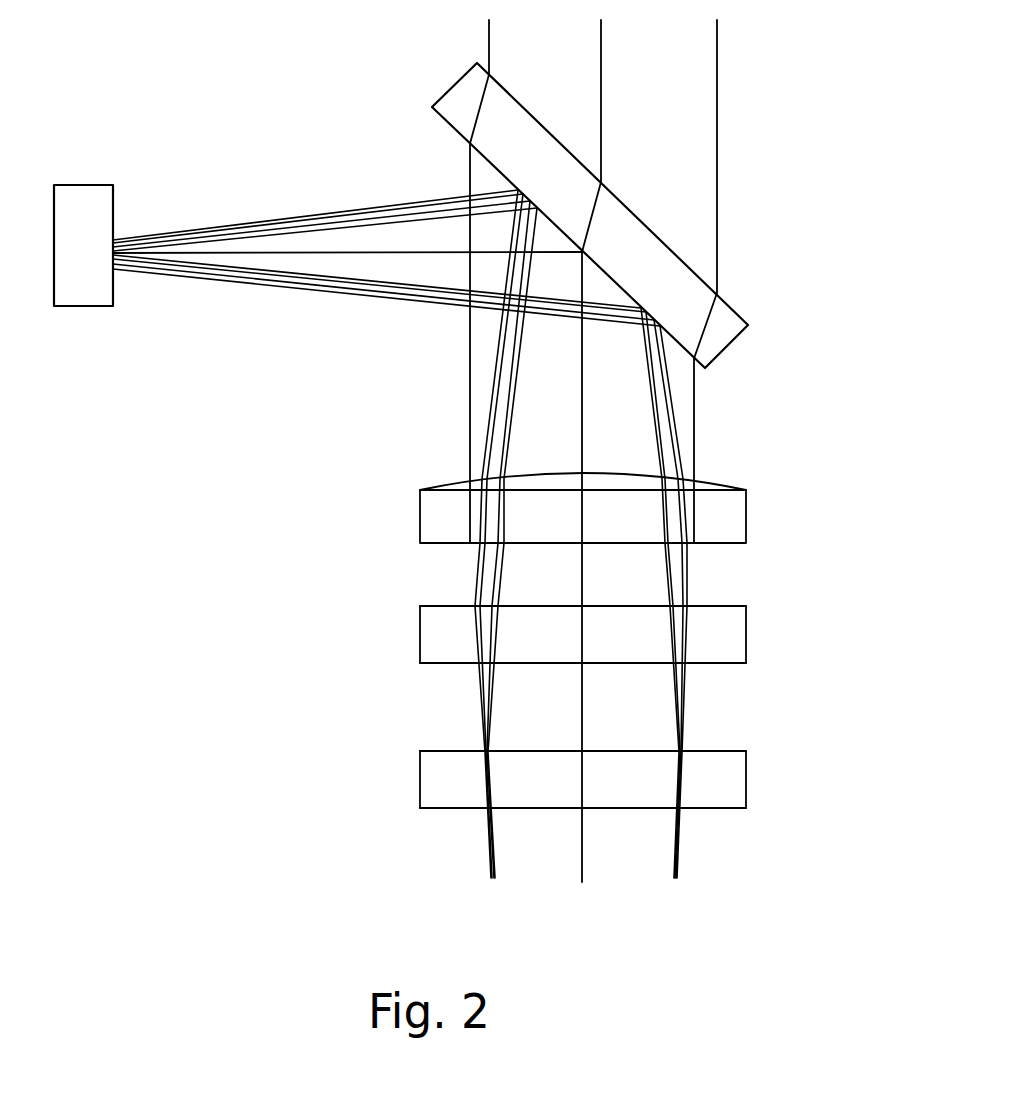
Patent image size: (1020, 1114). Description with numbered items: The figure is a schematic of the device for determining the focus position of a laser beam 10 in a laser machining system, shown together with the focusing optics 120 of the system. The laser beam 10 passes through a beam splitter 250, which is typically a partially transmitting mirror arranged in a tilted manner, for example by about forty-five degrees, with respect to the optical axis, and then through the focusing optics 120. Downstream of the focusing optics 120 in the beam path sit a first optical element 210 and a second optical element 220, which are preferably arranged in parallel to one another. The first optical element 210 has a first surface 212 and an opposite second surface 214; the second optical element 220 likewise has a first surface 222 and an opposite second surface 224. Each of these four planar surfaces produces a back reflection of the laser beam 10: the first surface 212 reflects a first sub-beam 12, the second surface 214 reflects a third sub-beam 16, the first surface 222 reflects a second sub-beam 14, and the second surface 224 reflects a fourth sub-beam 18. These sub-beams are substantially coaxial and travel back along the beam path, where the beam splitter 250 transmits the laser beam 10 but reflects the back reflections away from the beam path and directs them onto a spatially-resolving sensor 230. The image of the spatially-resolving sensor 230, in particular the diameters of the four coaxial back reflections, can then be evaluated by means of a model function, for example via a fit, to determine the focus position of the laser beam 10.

The laser beam 10 is at (717, 107).
The first sub-beam 12 is at (498, 380).
The second sub-beam 14 is at (498, 450).
The third sub-beam 16 is at (495, 405).
The fourth sub-beam 18 is at (497, 472).
The focusing optics 120 is at (746, 512).
The first optical element 210 is at (615, 664).
The first surface 212 is at (746, 607).
The second surface 214 is at (430, 665).
The second optical element 220 is at (617, 806).
The first surface 222 is at (732, 750).
The second surface 224 is at (437, 812).
The spatially-resolving sensor 230 is at (84, 185).
The beam splitter 250 is at (749, 327).